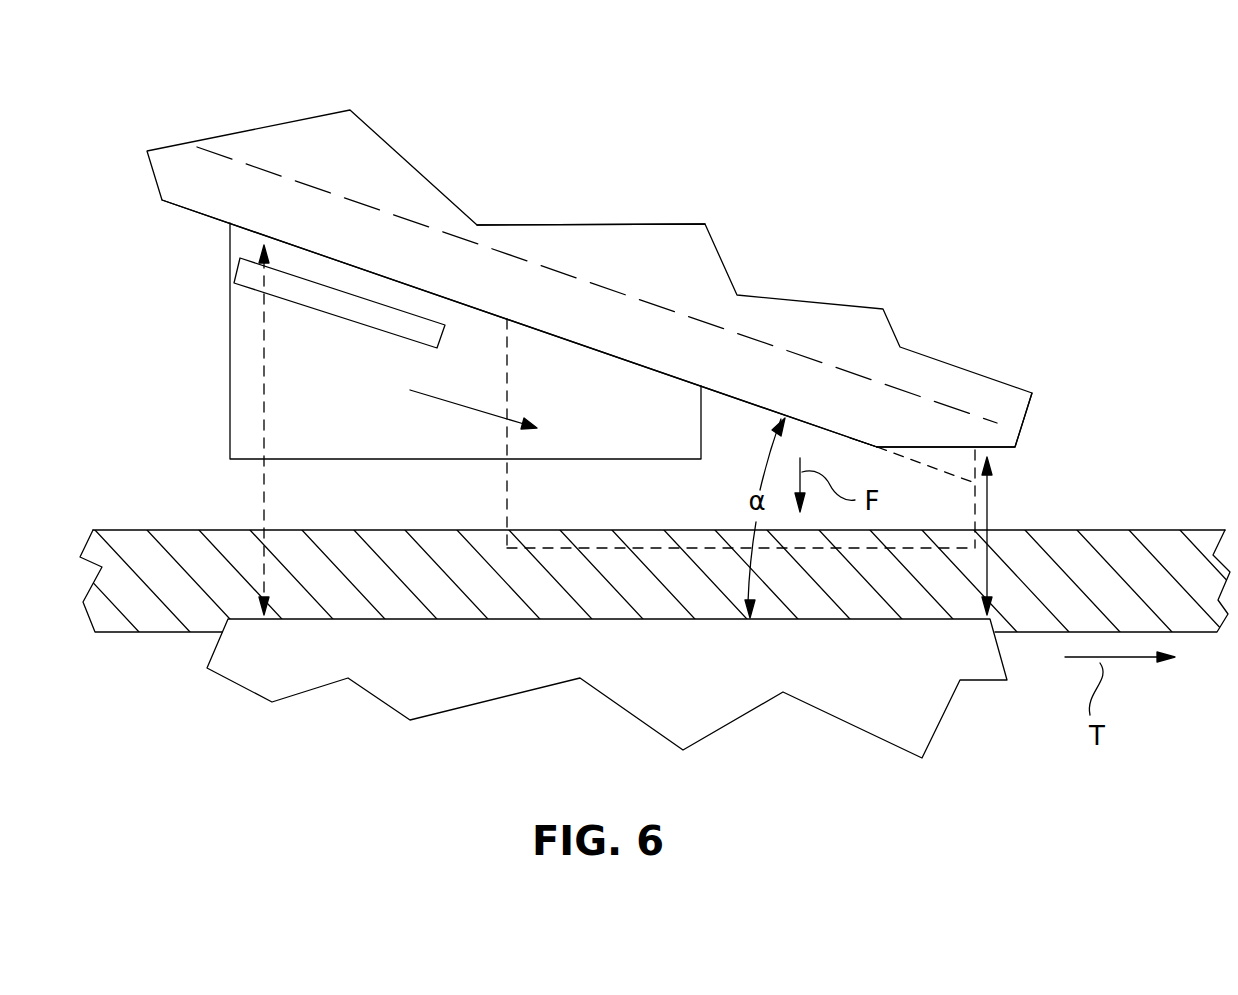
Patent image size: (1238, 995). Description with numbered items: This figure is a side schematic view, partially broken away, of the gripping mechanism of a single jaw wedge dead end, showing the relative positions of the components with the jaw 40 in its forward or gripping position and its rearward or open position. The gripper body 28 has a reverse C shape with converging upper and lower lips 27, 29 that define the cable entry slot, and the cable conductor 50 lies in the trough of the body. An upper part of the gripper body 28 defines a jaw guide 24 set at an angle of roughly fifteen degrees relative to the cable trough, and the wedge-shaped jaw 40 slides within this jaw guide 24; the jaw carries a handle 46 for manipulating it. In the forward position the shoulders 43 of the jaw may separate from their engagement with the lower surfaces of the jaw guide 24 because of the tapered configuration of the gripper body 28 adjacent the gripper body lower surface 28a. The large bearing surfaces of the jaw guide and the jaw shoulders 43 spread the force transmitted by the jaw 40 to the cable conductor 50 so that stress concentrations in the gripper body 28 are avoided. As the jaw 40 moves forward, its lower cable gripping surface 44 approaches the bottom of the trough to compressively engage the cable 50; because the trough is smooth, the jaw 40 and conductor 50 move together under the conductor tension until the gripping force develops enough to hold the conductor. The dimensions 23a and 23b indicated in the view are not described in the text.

The gripper body 28 is at (370, 172).
The upper lip 27 is at (579, 332).
The jaw guide 24 is at (480, 285).
The gripper body lower surface 28a is at (955, 447).
The shoulders 43 is at (922, 462).
The handle 46 is at (245, 273).
The jaw 40 is at (281, 383).
The cable gripping surface 44 is at (365, 460).
The rear gap height 23b is at (260, 488).
The front gap height 23a is at (988, 507).
The cable conductor 50 is at (182, 543).
The lower lip 29 is at (444, 669).